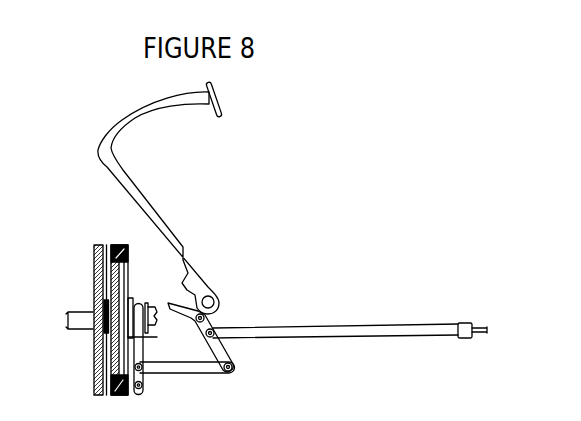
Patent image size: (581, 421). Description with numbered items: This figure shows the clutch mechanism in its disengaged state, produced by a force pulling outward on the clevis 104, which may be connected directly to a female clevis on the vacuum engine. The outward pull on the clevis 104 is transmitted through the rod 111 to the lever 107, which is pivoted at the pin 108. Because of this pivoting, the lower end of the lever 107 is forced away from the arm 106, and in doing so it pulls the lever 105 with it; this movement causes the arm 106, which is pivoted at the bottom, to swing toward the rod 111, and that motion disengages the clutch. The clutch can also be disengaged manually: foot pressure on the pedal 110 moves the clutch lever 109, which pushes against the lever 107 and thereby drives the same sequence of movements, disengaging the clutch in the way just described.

The clevis 104 is at (476, 311).
The lever 105 is at (188, 374).
The arm 106 is at (143, 347).
The lever 107 is at (209, 345).
The pin 108 is at (205, 316).
The clutch lever 109 is at (142, 193).
The pedal 110 is at (222, 88).
The rod 111 is at (317, 325).